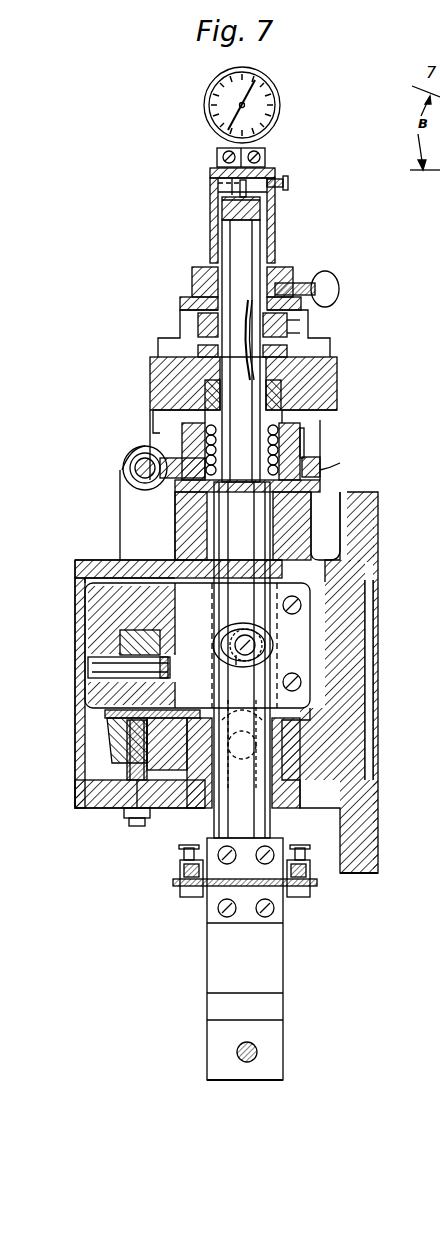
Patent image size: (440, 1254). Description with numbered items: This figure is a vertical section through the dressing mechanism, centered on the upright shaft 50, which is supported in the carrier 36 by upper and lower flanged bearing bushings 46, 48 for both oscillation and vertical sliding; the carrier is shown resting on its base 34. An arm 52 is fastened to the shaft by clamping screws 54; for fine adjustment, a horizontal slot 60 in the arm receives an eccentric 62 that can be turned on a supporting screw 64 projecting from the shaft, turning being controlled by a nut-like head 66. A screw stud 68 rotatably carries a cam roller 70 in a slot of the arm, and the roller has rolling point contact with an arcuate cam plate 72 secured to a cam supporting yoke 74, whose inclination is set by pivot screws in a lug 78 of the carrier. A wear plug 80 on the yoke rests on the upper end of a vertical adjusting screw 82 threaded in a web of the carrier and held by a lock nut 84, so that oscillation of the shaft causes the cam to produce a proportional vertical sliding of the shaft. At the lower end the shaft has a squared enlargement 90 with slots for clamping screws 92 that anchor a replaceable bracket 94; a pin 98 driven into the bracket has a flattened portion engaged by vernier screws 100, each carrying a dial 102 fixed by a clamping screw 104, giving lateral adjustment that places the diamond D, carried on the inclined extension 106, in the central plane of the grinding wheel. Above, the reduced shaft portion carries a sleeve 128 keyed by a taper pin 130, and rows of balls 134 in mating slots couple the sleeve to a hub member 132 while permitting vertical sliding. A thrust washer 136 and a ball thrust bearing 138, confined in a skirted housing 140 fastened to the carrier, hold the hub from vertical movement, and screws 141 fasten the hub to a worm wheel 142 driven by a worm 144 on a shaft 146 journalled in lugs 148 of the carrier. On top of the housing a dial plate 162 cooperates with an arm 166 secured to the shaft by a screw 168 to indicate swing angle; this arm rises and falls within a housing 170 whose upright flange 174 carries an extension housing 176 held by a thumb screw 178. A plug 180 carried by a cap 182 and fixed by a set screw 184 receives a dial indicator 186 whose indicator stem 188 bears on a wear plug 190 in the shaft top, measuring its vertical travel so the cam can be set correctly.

The dial indicator 186 is at (278, 122).
The cap 182 is at (272, 178).
The set screw 184 is at (288, 183).
The plug 180 is at (262, 205).
The indicator stem 188 is at (218, 183).
The wear plug 190 is at (218, 196).
The extension housing 176 is at (275, 232).
The thumb screw 178 is at (330, 272).
The upright flange 174 is at (195, 283).
The housing 170 is at (182, 303).
The arm 166 is at (196, 322).
The screw 168 is at (290, 325).
The dial plate 162 is at (292, 342).
The skirted housing 140 is at (335, 385).
The taper pin 130 is at (205, 395).
The sleeve 128 is at (170, 416).
The hub member 132 is at (182, 440).
The balls 134 is at (262, 462).
The ball thrust bearing 138 is at (300, 418).
The screws 141 is at (305, 440).
The worm wheel 142 is at (322, 468).
The worm 144 is at (124, 462).
The shaft 146 is at (138, 472).
The thrust washer 136 is at (322, 482).
The lugs 148 is at (120, 520).
The flanged bearing bushing 46 is at (282, 528).
The upright shaft 50 is at (242, 529).
The arm 52 is at (197, 645).
The clamping screws 54 is at (300, 607).
The supporting screw 64 is at (213, 640).
The eccentric 62 is at (262, 643).
The horizontal slot 60 is at (225, 650).
The nut-like head 66 is at (244, 668).
The screw stud 68 is at (110, 668).
The cam roller 70 is at (105, 714).
The cam plate 72 is at (107, 728).
The cam supporting yoke 74 is at (130, 748).
The lug 78 is at (365, 700).
The carrier 36 is at (348, 735).
The flanged bearing bushing 48 is at (300, 762).
The wear plug 80 is at (128, 762).
The adjusting screw 82 is at (110, 812).
The lock nut 84 is at (128, 818).
The base 34 is at (370, 862).
The clamping screw 104 is at (180, 855).
The vernier screws 100 is at (173, 882).
The dial 102 is at (195, 897).
The pin 98 is at (283, 897).
The squared enlargement 90 is at (214, 900).
The clamping screws 92 is at (234, 916).
The bracket 94 is at (265, 978).
The diamond D is at (257, 1052).
The extension 106 is at (262, 1082).